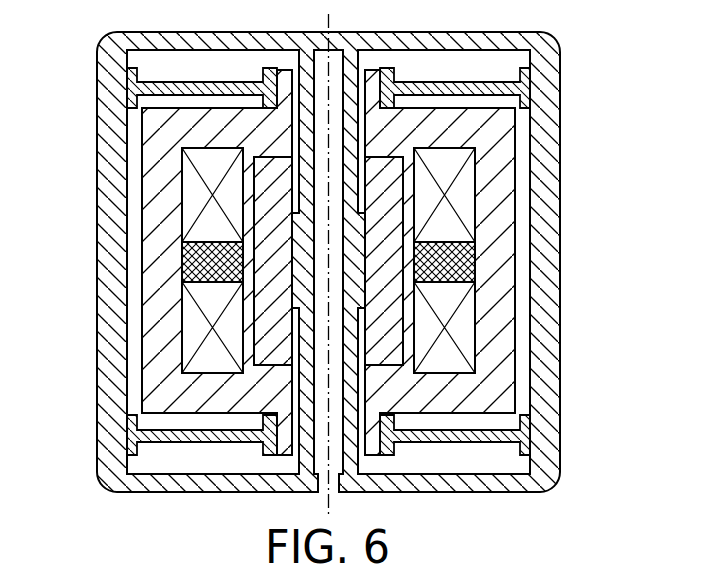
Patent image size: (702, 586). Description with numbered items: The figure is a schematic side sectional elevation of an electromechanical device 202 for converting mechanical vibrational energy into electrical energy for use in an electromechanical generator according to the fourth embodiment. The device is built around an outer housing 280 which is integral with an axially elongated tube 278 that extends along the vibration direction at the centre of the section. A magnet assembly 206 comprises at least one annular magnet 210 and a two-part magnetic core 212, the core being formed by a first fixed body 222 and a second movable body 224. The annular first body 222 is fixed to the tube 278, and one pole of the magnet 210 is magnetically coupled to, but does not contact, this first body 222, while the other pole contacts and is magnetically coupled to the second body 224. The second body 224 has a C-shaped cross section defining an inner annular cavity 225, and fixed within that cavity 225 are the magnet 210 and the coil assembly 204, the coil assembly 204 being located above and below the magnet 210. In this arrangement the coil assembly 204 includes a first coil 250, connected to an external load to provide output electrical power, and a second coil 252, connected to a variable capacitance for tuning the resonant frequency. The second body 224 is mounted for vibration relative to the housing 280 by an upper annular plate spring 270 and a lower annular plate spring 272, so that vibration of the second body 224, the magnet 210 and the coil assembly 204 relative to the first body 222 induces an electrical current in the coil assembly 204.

The electromechanical device 202 is at (83, 470).
The coil assembly 204 is at (193, 328).
The magnet assembly 206 is at (153, 117).
The annular magnet 210 is at (183, 252).
The two-part magnetic core 212 is at (153, 200).
The first fixed body 222 is at (220, 160).
The second movable body 224 is at (155, 232).
The inner annular cavity 225 is at (475, 305).
The first coil 250 is at (465, 183).
The second coil 252 is at (465, 342).
The upper annular plate spring 270 is at (165, 83).
The lower annular plate spring 272 is at (165, 443).
The axially elongated tube 278 is at (308, 65).
The outer housing 280 is at (120, 493).